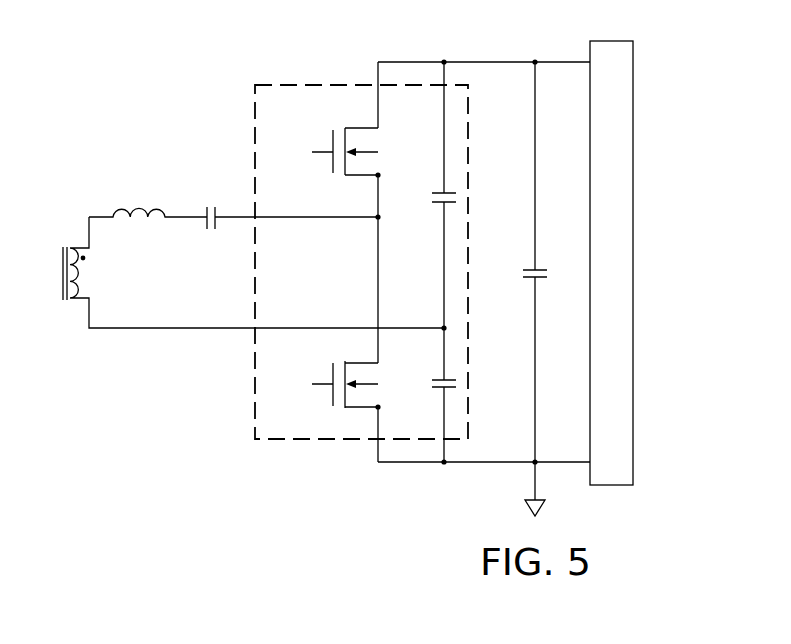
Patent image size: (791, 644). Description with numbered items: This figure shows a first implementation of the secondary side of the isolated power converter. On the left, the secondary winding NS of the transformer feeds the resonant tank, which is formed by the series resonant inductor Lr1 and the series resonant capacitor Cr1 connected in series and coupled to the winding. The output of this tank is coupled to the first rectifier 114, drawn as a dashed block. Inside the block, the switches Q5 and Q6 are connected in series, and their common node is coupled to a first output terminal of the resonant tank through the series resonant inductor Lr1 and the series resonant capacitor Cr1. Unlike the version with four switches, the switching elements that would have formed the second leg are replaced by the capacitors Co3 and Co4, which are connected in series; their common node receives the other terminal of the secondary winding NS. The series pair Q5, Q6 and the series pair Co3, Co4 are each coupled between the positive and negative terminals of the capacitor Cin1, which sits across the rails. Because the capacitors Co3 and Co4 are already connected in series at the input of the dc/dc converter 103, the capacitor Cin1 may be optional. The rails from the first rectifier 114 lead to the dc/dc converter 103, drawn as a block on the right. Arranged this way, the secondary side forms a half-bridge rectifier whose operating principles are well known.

The first rectifier 114 is at (318, 81).
The dc/dc converter 103 is at (633, 262).
The switch Q5 is at (327, 151).
The switch Q6 is at (327, 384).
The capacitor Co3 is at (425, 195).
The capacitor Co4 is at (425, 395).
The capacitor Cin1 is at (514, 289).
The series resonant inductor Lr1 is at (148, 198).
The series resonant capacitor Cr1 is at (288, 205).
The secondary winding NS is at (253, 272).